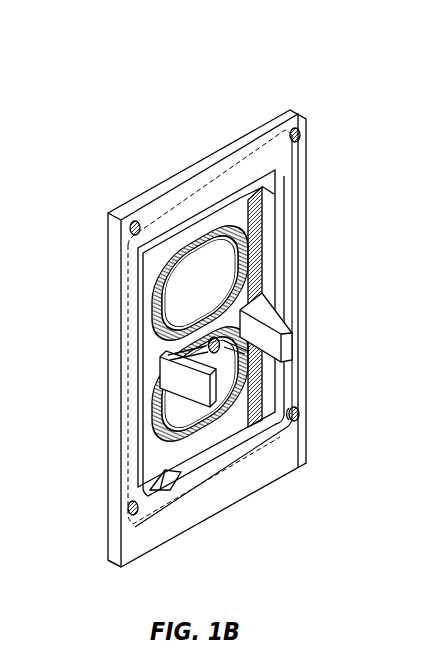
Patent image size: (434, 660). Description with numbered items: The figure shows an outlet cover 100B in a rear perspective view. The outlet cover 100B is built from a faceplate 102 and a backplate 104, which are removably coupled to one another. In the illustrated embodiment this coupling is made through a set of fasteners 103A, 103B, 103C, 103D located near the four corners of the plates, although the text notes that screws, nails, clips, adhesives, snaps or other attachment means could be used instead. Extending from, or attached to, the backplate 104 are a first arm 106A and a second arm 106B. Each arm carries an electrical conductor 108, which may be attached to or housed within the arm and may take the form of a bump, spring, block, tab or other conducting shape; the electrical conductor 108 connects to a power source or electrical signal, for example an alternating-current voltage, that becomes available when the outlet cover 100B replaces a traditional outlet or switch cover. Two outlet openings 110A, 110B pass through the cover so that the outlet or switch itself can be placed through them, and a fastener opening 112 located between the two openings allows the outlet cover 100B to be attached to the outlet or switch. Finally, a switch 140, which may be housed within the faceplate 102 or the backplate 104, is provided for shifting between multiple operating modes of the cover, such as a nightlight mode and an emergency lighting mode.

The outlet cover 100B is at (281, 53).
The faceplate 102 is at (302, 414).
The fastener 103A is at (287, 126).
The fastener 103B is at (130, 218).
The fastener 103C is at (126, 500).
The fastener 103D is at (303, 406).
The backplate 104 is at (278, 163).
The first arm 106A is at (282, 323).
The second arm 106B is at (186, 383).
The electrical conductor 108 is at (268, 369).
The outlet opening 110A is at (223, 273).
The outlet opening 110B is at (225, 383).
The fastener opening 112 is at (207, 346).
The switch 140 is at (170, 488).